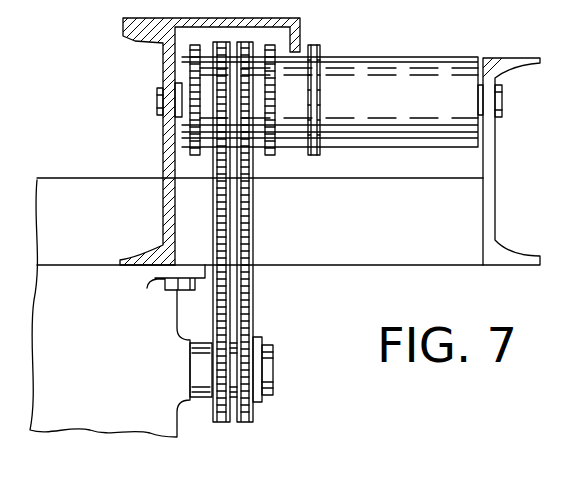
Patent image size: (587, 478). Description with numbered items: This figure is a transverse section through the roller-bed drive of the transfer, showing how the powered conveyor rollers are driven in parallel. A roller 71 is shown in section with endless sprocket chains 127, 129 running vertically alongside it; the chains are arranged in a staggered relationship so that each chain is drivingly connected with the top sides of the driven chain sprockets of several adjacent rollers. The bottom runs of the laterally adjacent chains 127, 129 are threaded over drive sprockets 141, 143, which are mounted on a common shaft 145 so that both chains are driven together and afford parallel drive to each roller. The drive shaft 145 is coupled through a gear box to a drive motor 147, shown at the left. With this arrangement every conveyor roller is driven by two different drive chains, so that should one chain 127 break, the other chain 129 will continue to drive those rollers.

The roller 71 is at (436, 66).
The endless sprocket chain 127 is at (216, 212).
The endless sprocket chain 129 is at (243, 227).
The drive sprocket 141 is at (220, 366).
The drive sprocket 143 is at (248, 379).
The drive shaft 145 is at (199, 380).
The drive motor 147 is at (101, 320).